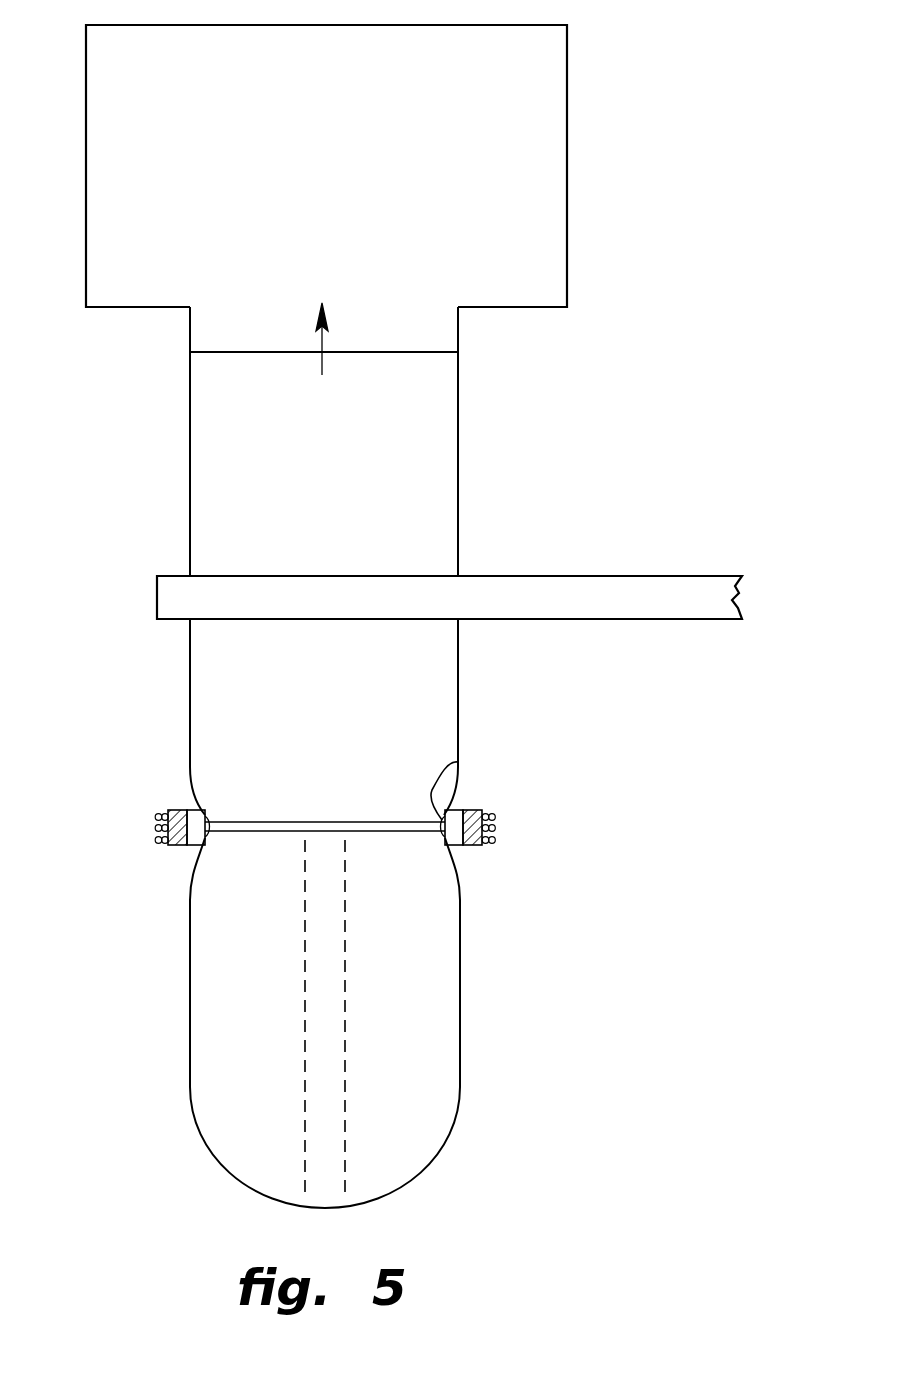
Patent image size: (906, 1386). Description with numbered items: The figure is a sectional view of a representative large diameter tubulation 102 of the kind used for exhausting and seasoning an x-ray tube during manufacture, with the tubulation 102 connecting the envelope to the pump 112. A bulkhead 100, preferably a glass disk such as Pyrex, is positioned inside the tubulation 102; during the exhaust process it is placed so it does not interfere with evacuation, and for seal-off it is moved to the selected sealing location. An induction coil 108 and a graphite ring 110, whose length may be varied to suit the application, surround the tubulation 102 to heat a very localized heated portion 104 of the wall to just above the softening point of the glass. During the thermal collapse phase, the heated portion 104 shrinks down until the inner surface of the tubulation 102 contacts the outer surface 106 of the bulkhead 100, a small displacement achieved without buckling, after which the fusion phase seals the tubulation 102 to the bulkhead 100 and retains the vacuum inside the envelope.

The bulkhead 100 is at (247, 826).
The large diameter tubulation 102 is at (460, 966).
The heated portion 104 is at (198, 808).
The outer surface 106 is at (458, 765).
The induction coil 108 is at (497, 826).
The graphite ring 110 is at (478, 845).
The pump 112 is at (567, 258).